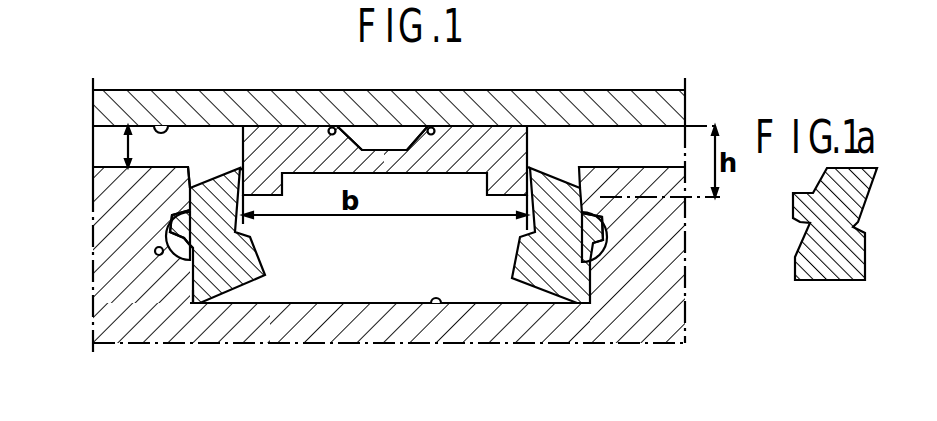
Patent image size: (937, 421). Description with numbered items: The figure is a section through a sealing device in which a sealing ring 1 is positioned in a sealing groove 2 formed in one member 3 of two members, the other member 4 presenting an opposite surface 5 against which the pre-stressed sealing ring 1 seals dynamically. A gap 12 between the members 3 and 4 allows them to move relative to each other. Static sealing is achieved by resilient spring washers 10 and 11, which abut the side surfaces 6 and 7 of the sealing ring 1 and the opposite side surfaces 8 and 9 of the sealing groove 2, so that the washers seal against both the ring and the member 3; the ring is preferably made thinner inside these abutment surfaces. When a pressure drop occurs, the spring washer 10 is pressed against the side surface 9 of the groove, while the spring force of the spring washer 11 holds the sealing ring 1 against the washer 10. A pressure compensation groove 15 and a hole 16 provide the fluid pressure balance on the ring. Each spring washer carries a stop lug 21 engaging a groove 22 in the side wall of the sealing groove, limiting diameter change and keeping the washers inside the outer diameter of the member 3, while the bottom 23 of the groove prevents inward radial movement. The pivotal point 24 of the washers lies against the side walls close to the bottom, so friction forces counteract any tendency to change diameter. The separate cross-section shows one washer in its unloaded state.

In FIG. 1, the sealing ring 1 is at (482, 140).
In FIG. 1, the sealing groove 2 is at (373, 281).
In FIG. 1, the member 3 is at (313, 323).
In FIG. 1, the member 4 is at (618, 100).
In FIG. 1, the opposite surface 5 is at (162, 124).
In FIG. 1, the side surface 6 is at (530, 167).
In FIG. 1, the side surface 7 is at (240, 150).
In FIG. 1, the side surface 8 is at (581, 195).
In FIG. 1, the side surface 9 is at (190, 172).
In FIG. 1, the spring washer 10 is at (230, 278).
In FIG. 1a, the spring washer 10 is at (822, 273).
In FIG. 1, the spring washer 11 is at (556, 280).
In FIG. 1, the gap 12 is at (128, 152).
In FIG. 1, the pressure compensation groove 15 is at (332, 127).
In FIG. 1, the hole 16 is at (408, 152).
In FIG. 1, the stop lug 21 is at (150, 240).
In FIG. 1, the groove 22 is at (185, 266).
In FIG. 1, the bottom 23 is at (437, 306).
In FIG. 1, the pivotal point 24 is at (186, 293).